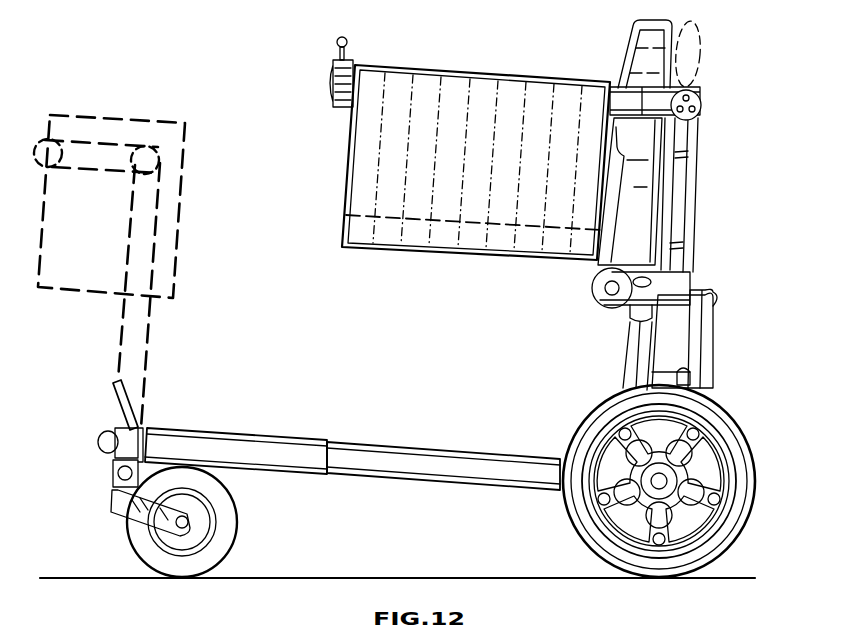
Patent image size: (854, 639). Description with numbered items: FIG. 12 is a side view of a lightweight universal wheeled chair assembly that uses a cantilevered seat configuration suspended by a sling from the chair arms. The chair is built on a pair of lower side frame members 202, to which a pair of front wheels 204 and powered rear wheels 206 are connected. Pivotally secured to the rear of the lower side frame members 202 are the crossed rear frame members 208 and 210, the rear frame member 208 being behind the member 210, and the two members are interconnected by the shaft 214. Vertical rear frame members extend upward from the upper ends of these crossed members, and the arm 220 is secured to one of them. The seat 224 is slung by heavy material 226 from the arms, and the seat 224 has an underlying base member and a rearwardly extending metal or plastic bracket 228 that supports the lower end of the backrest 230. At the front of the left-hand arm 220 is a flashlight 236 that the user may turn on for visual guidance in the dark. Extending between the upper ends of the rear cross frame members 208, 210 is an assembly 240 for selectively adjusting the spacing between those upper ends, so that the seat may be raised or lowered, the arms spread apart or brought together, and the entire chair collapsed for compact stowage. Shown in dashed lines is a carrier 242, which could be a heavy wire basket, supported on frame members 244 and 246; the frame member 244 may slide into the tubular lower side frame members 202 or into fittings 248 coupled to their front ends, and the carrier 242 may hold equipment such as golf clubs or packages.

The lower side frame members 202 is at (387, 457).
The front wheels 204 is at (210, 508).
The powered rear wheels 206 is at (725, 435).
The rear frame member 208 is at (698, 335).
The rear frame member 210 is at (633, 347).
The shaft 214 is at (686, 380).
The arm 220 is at (622, 93).
The seat 224 is at (471, 239).
The heavy material 226 is at (476, 166).
The bracket 228 is at (657, 275).
The backrest 230 is at (652, 147).
The flashlight 236 is at (332, 80).
The assembly 240 is at (610, 307).
The carrier 242 is at (105, 233).
The frame member 244 is at (150, 340).
The frame member 246 is at (110, 152).
The fittings 248 is at (125, 432).